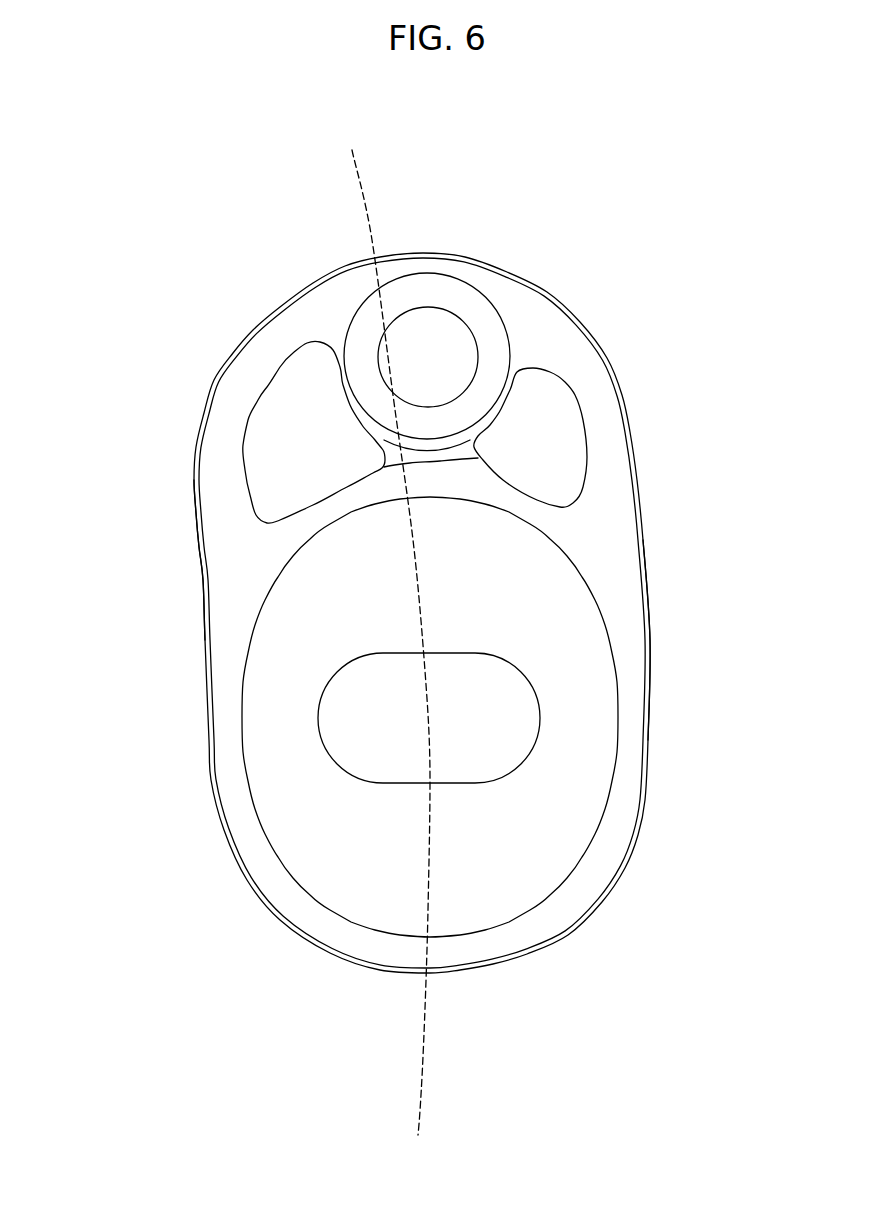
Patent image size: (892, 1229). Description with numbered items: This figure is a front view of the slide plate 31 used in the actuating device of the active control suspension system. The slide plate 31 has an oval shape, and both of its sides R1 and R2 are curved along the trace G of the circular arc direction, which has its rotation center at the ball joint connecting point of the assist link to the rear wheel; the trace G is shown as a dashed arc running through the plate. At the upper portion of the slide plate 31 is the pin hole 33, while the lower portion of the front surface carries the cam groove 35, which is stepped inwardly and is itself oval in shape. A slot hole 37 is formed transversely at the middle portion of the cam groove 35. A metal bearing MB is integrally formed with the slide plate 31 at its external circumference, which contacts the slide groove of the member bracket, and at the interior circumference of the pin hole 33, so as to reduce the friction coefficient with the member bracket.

The slide plate 31 is at (652, 467).
The pin hole 33 is at (438, 349).
The cam groove 35 is at (573, 680).
The slot hole 37 is at (482, 769).
The trace of a circular arc direction G is at (362, 198).
The metal bearing MB is at (500, 355).
The side of the slide plate R1 is at (196, 593).
The side of the slide plate R2 is at (655, 607).